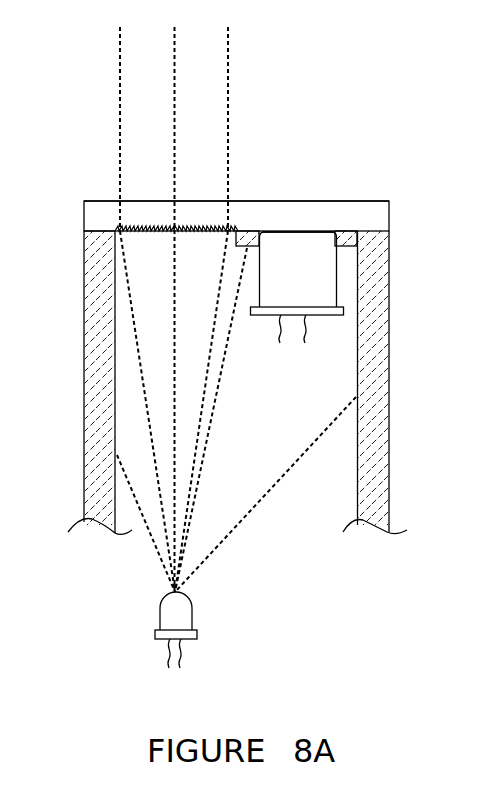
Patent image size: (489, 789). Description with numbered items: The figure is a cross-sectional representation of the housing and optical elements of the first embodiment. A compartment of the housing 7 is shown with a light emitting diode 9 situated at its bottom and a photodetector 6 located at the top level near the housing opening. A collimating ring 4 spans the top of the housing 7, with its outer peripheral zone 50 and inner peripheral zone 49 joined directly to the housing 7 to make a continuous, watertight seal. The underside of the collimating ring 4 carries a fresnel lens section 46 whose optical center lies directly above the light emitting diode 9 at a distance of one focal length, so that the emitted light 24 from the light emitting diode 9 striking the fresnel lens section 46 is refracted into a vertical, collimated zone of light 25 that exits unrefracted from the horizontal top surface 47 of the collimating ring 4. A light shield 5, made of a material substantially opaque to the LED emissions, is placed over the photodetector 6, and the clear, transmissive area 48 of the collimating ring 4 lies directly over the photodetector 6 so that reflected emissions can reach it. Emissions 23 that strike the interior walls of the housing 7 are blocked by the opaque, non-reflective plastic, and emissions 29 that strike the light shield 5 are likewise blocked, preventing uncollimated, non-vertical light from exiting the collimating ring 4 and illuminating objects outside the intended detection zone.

The collimating ring 4 is at (92, 213).
The light shield 5 is at (354, 232).
The photodetector 6 is at (305, 295).
The housing 7 is at (380, 443).
The light emitting diode 9 is at (185, 615).
The emissions striking interior walls 23 is at (152, 540).
The emitted light 24 is at (133, 318).
The vertical collimated light 25 is at (118, 102).
The LED emissions striking the shield 29 is at (210, 430).
The fresnel lens section 46 is at (152, 230).
The horizontal top surface 47 is at (213, 201).
The transmissive aperture area 48 is at (305, 233).
The inner peripheral zone 49 is at (375, 231).
The outer peripheral zone 50 is at (113, 232).